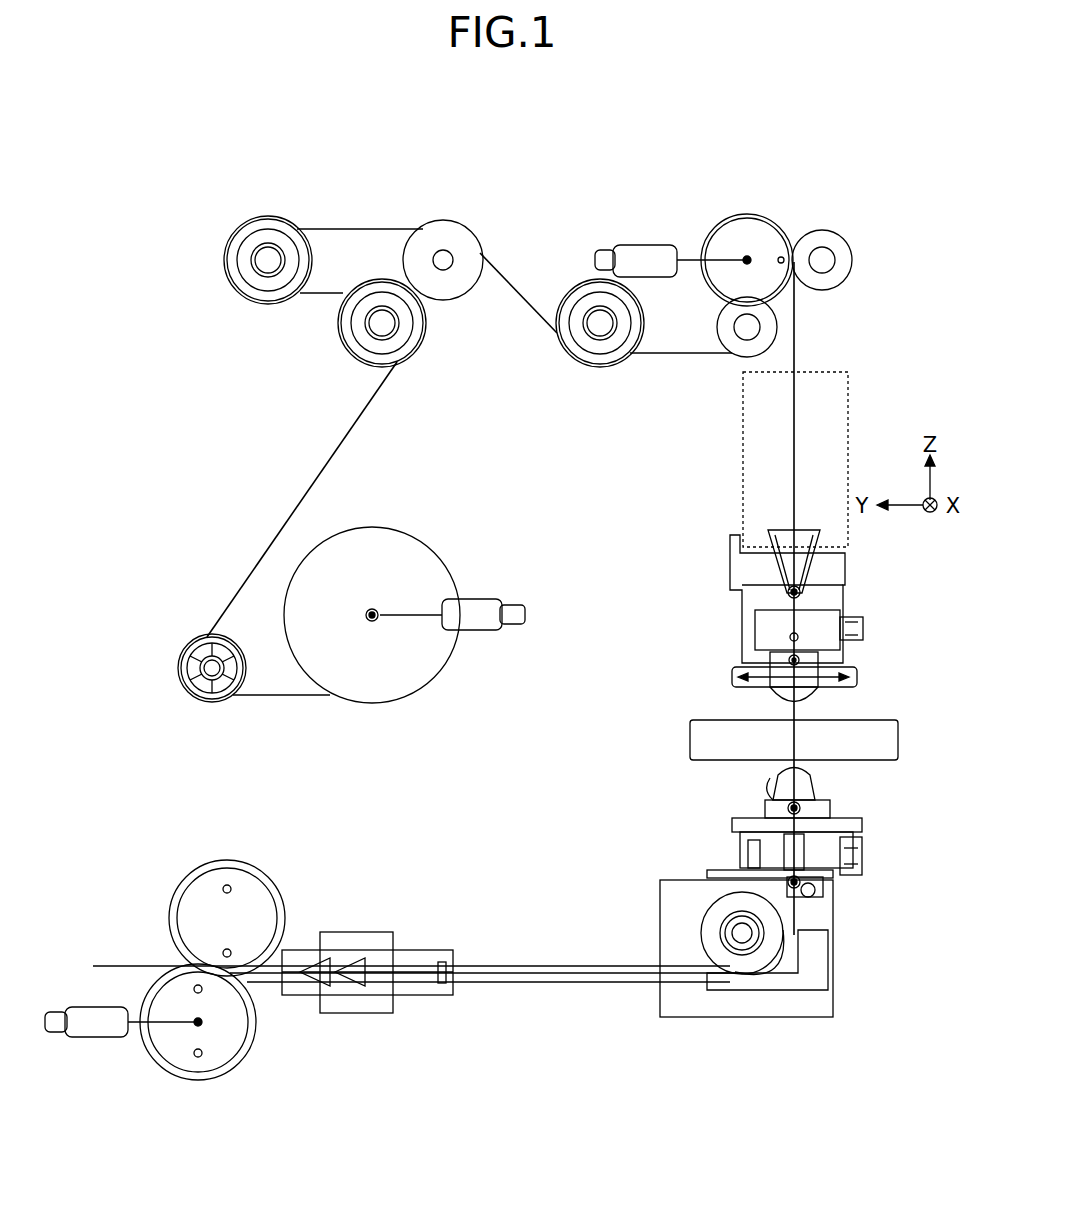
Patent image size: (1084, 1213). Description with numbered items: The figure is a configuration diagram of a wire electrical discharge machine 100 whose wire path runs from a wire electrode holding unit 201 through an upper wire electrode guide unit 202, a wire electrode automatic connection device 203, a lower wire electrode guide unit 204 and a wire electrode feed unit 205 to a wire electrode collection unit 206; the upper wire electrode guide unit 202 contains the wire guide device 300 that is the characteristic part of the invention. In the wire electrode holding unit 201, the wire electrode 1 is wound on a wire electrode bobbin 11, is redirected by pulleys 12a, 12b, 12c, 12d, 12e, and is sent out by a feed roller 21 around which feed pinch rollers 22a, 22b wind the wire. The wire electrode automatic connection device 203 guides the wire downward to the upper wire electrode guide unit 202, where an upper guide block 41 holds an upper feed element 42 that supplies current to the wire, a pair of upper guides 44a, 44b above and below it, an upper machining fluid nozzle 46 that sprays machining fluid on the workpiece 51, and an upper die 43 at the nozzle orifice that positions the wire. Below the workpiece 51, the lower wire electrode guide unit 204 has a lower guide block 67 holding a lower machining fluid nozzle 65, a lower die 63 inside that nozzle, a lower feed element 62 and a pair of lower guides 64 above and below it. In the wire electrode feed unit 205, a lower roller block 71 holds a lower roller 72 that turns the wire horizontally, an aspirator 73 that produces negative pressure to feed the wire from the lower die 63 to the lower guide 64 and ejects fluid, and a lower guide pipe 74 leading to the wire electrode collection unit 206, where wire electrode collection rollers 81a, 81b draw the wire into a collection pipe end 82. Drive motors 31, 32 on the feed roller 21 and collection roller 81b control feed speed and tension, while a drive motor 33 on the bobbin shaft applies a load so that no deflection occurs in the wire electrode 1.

The wire electrical discharge machine 100 is at (535, 135).
The wire electrode 1 is at (317, 470).
The wire electrode bobbin 11 is at (438, 657).
The pulley 12a is at (183, 673).
The pulley 12b is at (422, 336).
The pulley 12c is at (228, 266).
The pulley 12d is at (441, 233).
The pulley 12e is at (576, 356).
The feed roller 21 is at (718, 243).
The feed pinch roller 22a is at (737, 343).
The feed pinch roller 22b is at (852, 261).
The drive motor 31 is at (97, 1038).
The drive motor 32 is at (637, 245).
The drive motor 33 is at (481, 598).
The upper guide block 41 is at (736, 563).
The upper feed element 42 is at (758, 625).
The upper die 43 is at (818, 692).
The upper guide 44a is at (801, 589).
The upper guide 44b is at (801, 660).
The upper machining fluid nozzle 46 is at (768, 703).
The workpiece 51 is at (880, 740).
The lower feed element 62 is at (804, 850).
The lower die 63 is at (805, 776).
The lower guide 64 is at (801, 807).
The lower machining fluid nozzle 65 is at (772, 780).
The lower guide block 67 is at (742, 846).
The lower roller block 71 is at (818, 1003).
The lower roller 72 is at (700, 929).
The aspirator 73 is at (822, 896).
The lower guide pipe 74 is at (638, 988).
The wire electrode collection roller 81a is at (268, 887).
The wire electrode collection roller 81b is at (256, 1031).
The collection pipe end 82 is at (388, 1005).
The wire electrode holding unit 201 is at (126, 434).
The upper wire electrode guide unit 202 is at (921, 694).
The wire electrode automatic connection device 203 is at (838, 406).
The lower wire electrode guide unit 204 is at (919, 871).
The wire electrode feed unit 205 is at (731, 1053).
The wire electrode collection unit 206 is at (76, 923).
The wire guide device 300 is at (789, 639).